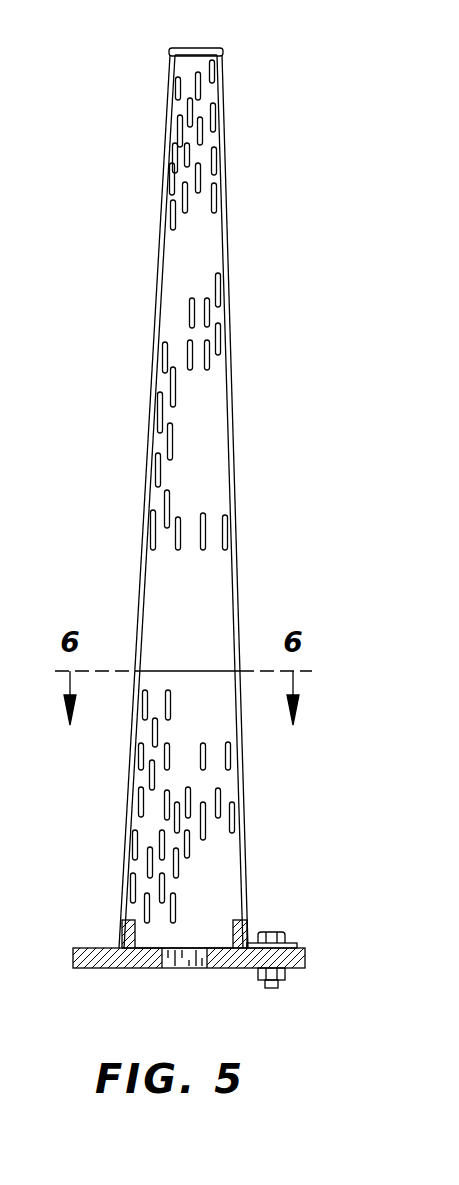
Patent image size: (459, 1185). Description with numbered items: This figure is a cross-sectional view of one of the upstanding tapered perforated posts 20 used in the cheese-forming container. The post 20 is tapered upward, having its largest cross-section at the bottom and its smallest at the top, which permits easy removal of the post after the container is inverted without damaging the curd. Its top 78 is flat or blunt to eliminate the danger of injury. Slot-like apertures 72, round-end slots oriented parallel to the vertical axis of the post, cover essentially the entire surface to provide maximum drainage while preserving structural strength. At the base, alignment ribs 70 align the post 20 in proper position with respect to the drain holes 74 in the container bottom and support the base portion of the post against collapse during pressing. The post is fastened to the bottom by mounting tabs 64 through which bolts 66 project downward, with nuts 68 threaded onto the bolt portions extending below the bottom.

The post 20 is at (168, 474).
The top 78 is at (185, 48).
The slot-like apertures 72 is at (161, 185).
The alignment ribs 70 is at (137, 942).
The drain holes 74 is at (186, 968).
The mounting tabs 64 is at (296, 944).
The bolts 66 is at (266, 933).
The nuts 68 is at (260, 973).